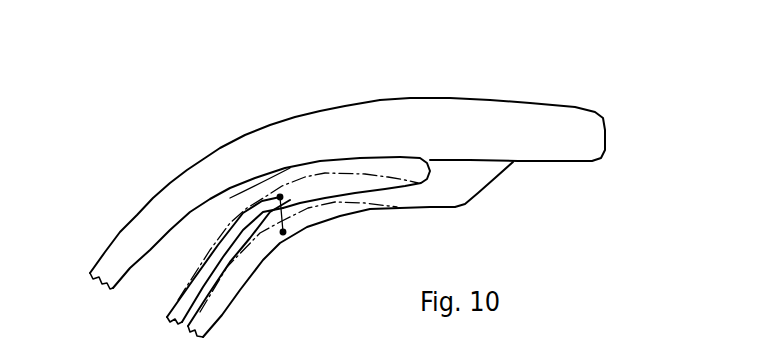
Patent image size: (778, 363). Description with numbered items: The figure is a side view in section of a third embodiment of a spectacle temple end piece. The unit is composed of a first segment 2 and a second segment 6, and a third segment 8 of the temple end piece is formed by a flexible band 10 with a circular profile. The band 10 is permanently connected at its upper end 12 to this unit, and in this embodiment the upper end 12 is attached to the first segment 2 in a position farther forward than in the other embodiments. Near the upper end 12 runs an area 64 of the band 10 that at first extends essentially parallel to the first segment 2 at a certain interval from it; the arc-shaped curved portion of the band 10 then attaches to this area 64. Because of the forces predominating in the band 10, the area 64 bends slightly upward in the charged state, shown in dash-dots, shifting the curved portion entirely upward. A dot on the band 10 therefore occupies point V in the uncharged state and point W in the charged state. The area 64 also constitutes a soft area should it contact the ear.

The first segment 2 is at (508, 100).
The second segment 6 is at (135, 208).
The third segment 8 is at (282, 279).
The flexible band 10 is at (226, 283).
The upper end 12 is at (476, 182).
The area 64 is at (397, 192).
The point w W is at (280, 197).
The point v V is at (283, 232).